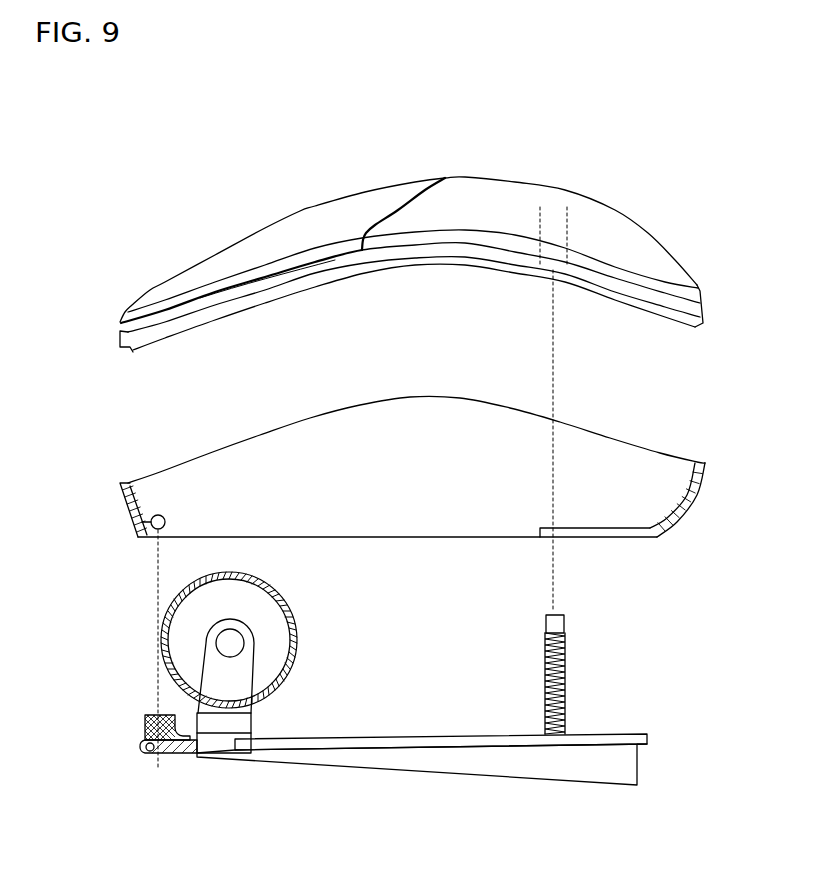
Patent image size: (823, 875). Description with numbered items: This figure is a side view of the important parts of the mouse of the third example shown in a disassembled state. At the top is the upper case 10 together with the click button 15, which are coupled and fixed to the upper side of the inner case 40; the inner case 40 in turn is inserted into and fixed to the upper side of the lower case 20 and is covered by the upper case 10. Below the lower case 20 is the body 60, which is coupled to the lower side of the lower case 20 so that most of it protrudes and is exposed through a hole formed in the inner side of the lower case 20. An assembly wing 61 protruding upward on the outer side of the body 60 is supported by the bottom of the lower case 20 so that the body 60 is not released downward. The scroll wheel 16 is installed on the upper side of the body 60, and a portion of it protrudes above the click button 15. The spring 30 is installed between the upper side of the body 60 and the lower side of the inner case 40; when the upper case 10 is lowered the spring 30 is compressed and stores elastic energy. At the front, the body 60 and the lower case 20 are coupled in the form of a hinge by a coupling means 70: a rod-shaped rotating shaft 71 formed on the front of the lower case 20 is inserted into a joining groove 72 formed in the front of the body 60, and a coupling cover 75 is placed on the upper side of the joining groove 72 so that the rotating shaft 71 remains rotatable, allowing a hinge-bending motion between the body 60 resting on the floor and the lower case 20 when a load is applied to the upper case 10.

The upper case 10 is at (597, 237).
The click button 15 is at (283, 243).
The lower case 20 is at (705, 470).
The spring 30 is at (567, 672).
The inner case 40 is at (615, 303).
The scroll wheel 16 is at (286, 622).
The body 60 is at (535, 762).
The assembly wing 61 is at (650, 737).
The coupling means 70 is at (140, 744).
The rotating shaft 71 is at (160, 518).
The joining groove 72 is at (155, 760).
The coupling cover 75 is at (142, 730).